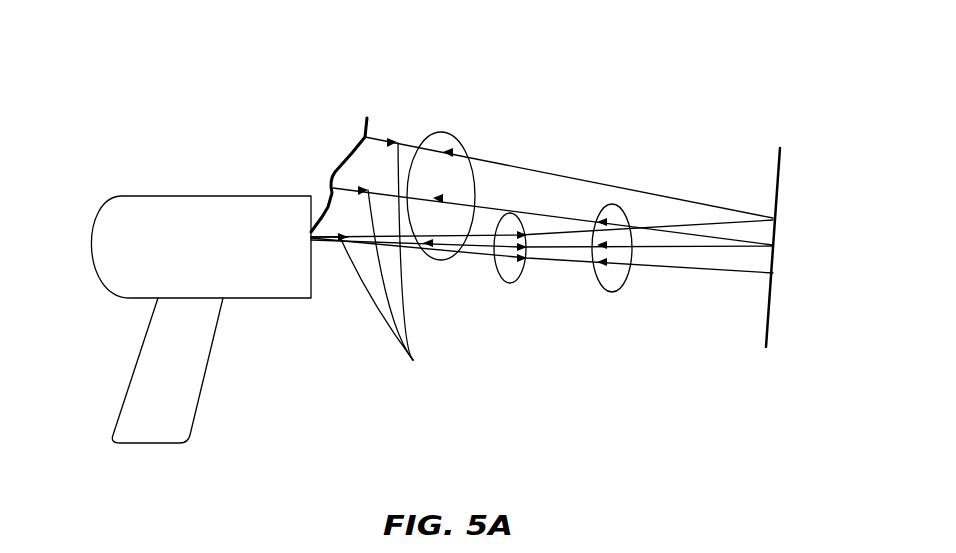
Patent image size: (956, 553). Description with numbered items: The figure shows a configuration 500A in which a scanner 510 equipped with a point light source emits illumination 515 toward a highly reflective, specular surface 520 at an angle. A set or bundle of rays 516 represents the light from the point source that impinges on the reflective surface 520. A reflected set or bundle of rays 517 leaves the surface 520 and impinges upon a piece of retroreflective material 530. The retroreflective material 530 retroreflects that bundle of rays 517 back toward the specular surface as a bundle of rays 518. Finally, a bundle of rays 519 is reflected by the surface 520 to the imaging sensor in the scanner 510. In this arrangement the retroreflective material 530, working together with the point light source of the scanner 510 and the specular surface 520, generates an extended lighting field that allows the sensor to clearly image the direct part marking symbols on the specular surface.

The configuration 500A is at (150, 40).
The scanner 510 is at (160, 196).
The illumination 515 is at (313, 245).
The bundle of rays 516 is at (518, 284).
The reflected bundle of rays 517 is at (468, 155).
The bundle of rays 518 is at (413, 360).
The bundle of rays 519 is at (613, 293).
The highly reflective surface 520 is at (775, 148).
The retroreflective material 530 is at (338, 168).